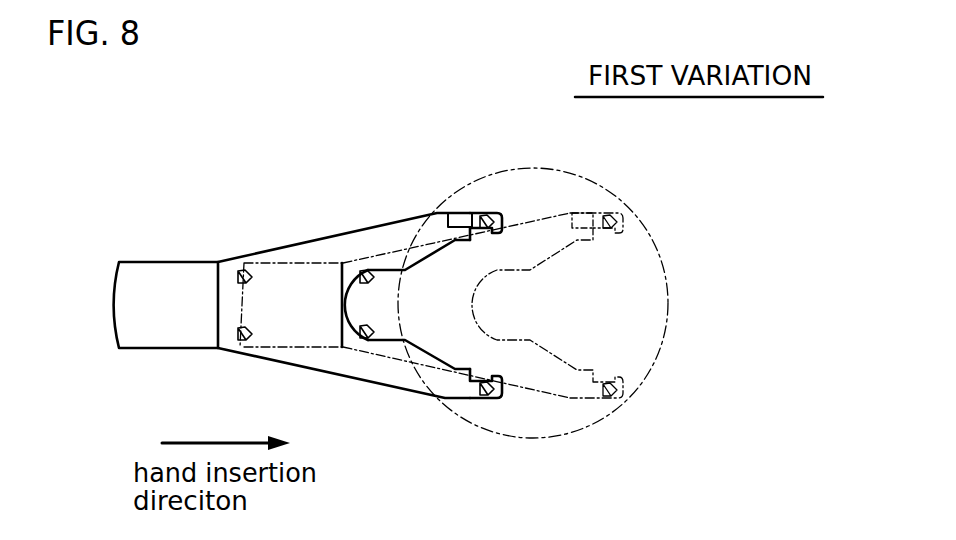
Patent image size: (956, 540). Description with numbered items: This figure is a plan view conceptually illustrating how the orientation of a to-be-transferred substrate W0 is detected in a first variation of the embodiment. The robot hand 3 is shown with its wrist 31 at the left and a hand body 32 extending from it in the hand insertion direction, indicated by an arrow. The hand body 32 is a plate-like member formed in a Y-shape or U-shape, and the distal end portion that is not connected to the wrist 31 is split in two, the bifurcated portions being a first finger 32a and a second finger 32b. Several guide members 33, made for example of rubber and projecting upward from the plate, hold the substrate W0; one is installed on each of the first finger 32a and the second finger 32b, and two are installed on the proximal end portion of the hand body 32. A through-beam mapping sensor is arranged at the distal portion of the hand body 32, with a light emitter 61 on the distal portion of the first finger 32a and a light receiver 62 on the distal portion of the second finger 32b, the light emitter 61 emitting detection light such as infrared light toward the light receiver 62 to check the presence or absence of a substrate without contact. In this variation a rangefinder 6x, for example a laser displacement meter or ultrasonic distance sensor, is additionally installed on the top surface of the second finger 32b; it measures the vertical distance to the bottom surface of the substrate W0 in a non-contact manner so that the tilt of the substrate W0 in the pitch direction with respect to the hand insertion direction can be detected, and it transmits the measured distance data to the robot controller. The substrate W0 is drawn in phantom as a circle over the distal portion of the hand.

The robot hand 3 is at (272, 192).
The wrist 31 is at (165, 278).
The hand body 32 is at (276, 258).
The first finger 32a is at (404, 372).
The second finger 32b is at (378, 242).
The rangefinder 6x is at (462, 216).
The guide member 33 is at (486, 214).
The light emitter 61 is at (502, 376).
The light receiver 62 is at (503, 234).
The to-be-transferred substrate W0 is at (668, 298).